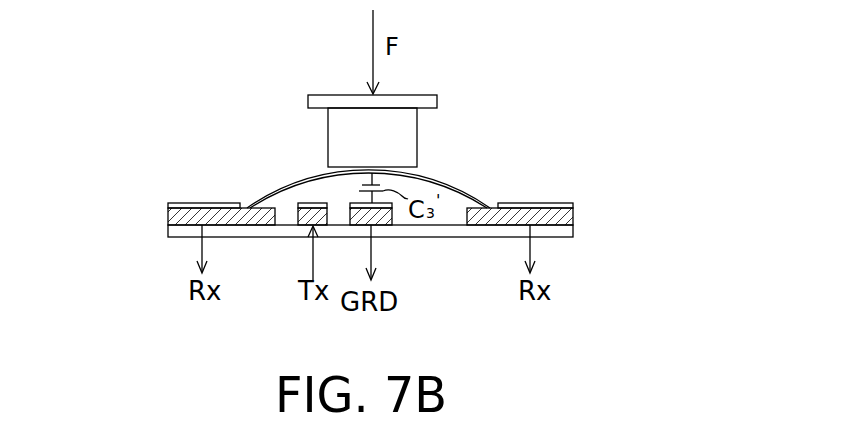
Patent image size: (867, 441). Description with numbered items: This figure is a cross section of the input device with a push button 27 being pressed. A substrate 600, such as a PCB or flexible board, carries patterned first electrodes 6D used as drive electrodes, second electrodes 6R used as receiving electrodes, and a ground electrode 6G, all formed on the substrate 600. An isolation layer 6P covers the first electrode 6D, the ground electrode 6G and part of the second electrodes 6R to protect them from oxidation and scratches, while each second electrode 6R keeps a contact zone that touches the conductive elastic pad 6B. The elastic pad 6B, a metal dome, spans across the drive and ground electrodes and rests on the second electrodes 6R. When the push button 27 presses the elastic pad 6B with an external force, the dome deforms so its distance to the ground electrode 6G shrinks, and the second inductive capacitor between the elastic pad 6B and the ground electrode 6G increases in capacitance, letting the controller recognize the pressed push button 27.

The push button 27 is at (408, 133).
The elastic pad 6B is at (443, 181).
The substrate 600 is at (168, 231).
The second electrode 6R is at (168, 214).
The first electrode 6D is at (303, 225).
The ground electrode 6G is at (382, 227).
The isolation layer 6P is at (195, 203).